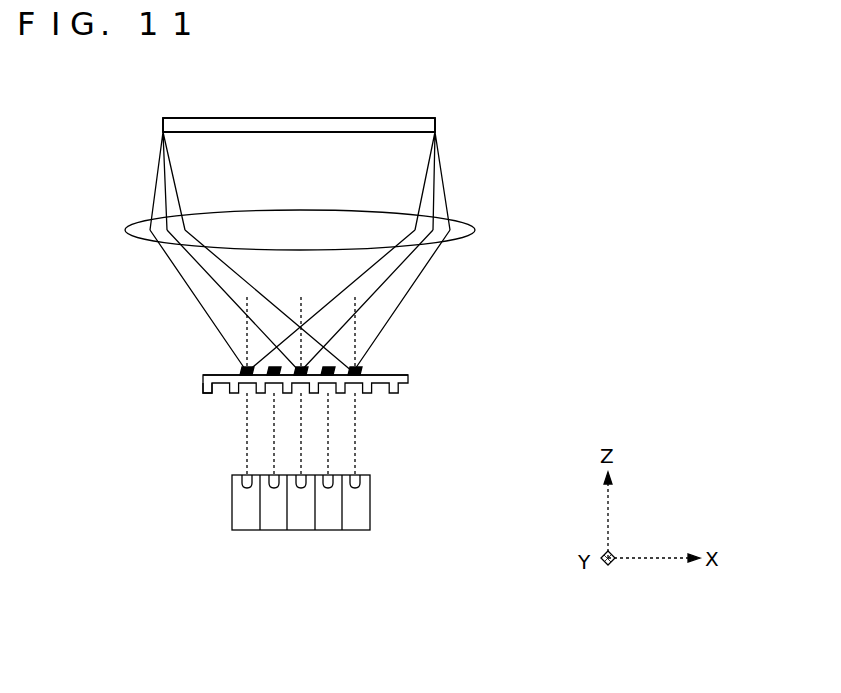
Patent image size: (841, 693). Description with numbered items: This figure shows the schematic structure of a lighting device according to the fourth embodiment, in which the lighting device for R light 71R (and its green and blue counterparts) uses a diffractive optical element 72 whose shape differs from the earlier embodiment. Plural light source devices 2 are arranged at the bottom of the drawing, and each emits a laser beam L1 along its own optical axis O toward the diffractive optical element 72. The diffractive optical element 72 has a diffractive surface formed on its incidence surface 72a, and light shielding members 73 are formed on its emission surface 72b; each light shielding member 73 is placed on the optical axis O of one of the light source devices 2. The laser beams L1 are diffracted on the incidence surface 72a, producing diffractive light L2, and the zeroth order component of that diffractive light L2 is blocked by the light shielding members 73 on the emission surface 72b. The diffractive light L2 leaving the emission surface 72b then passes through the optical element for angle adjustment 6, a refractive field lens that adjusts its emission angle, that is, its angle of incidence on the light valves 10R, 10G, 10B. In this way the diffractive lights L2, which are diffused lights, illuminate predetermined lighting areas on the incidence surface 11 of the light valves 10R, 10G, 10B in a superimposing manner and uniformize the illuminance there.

The incidence surface 11 is at (336, 132).
The light valve for R light 10R is at (437, 119).
The light valve for G light 10G is at (299, 125).
The light valve for B light 10B is at (299, 125).
The optical element for angle adjustment 6 is at (459, 217).
The lighting device for R light 71R is at (588, 178).
The diffractive optical element 72 is at (411, 380).
The incidence surface 72a is at (213, 397).
The emission surface 72b is at (401, 372).
The light shielding member 73 is at (214, 366).
The light source device 2 is at (272, 533).
The laser beam L1 is at (358, 443).
The diffractive light L2 is at (178, 283).
The optical axis O is at (202, 322).